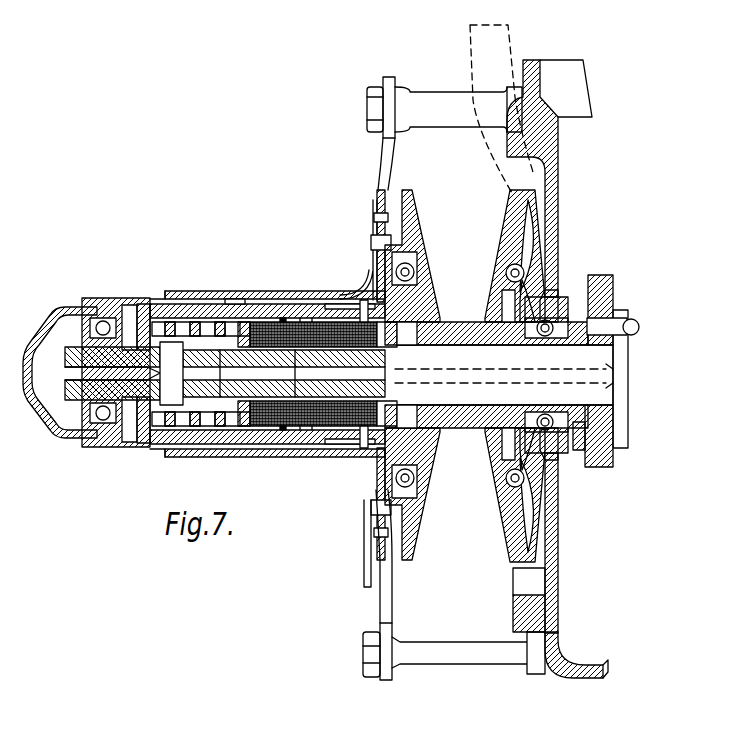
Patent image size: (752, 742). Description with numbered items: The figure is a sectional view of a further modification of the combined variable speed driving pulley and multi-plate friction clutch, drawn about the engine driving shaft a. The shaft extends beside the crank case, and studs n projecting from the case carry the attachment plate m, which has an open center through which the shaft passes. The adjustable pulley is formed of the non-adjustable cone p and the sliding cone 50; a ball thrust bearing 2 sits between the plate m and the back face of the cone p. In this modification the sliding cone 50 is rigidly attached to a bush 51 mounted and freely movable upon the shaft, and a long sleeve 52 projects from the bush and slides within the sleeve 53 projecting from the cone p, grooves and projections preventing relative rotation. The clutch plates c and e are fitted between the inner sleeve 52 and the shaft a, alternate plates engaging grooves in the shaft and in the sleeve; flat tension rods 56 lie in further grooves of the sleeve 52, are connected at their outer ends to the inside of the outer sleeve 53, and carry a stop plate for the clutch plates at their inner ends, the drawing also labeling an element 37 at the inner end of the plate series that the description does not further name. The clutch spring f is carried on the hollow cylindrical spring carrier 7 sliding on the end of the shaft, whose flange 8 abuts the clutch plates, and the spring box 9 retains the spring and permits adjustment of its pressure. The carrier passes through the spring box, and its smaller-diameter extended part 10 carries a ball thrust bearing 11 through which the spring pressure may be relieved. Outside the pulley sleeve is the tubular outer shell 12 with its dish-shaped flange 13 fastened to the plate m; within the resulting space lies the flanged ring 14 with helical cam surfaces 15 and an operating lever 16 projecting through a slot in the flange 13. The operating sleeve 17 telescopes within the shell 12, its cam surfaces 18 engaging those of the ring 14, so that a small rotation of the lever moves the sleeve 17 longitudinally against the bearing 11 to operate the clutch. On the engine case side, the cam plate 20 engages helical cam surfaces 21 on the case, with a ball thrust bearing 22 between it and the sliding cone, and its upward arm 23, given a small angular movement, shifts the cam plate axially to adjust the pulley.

The extended part 10 is at (62, 395).
The ball thrust bearing 11 is at (97, 300).
The spring box 9 is at (150, 305).
The operating sleeve 17 is at (143, 305).
The driving shaft a is at (339, 375).
The hollow cylindrical spring carrier 7 is at (177, 373).
The tubular outer shell 12 is at (201, 291).
The flange 8 is at (259, 304).
The flat tension rods 56 is at (233, 299).
The sleeve 53 is at (283, 318).
The clutch plates e is at (312, 318).
The sleeve 52 is at (340, 304).
The cam surfaces 15 is at (366, 300).
The cam surfaces 18 is at (340, 444).
The clutch spring f is at (200, 426).
The clutch plates c is at (288, 426).
The ring 37 is at (380, 408).
The dish-shaped flange 13 is at (371, 243).
The flanged ring 14 is at (363, 468).
The pulley cone p is at (417, 232).
The ball thrust bearing 2 is at (416, 271).
The bush 51 is at (460, 322).
The sliding cone 50 is at (505, 226).
The cam plate 20 is at (528, 248).
The ball thrust bearing 22 is at (550, 268).
The cam surfaces 21 is at (540, 140).
The studs n is at (444, 642).
The attachment plate m is at (393, 603).
The operating lever 16 is at (364, 559).
The arm 23 is at (480, 45).